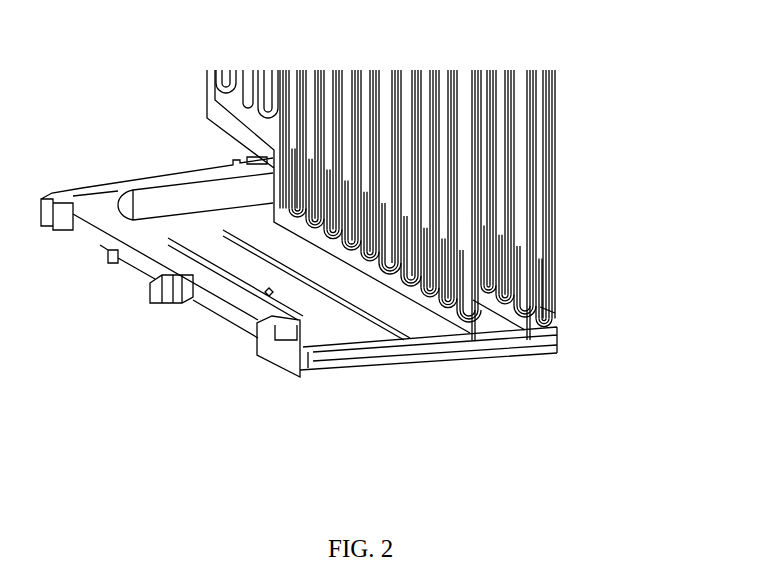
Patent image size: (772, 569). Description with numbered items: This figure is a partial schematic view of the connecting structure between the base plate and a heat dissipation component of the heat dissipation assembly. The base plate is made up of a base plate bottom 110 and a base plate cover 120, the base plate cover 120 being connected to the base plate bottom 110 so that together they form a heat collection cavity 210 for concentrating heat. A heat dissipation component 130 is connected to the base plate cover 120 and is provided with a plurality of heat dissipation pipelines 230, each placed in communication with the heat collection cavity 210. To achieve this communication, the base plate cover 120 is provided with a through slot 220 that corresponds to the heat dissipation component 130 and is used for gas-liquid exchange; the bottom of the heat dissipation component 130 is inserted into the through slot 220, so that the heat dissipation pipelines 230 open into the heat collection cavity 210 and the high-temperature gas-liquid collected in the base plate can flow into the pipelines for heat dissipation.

The base plate bottom 110 is at (268, 291).
The base plate cover 120 is at (545, 336).
The heat dissipation component 130 is at (207, 97).
The heat collection cavity 210 is at (452, 355).
The through slot 220 is at (305, 355).
The heat dissipation pipeline 230 is at (540, 197).